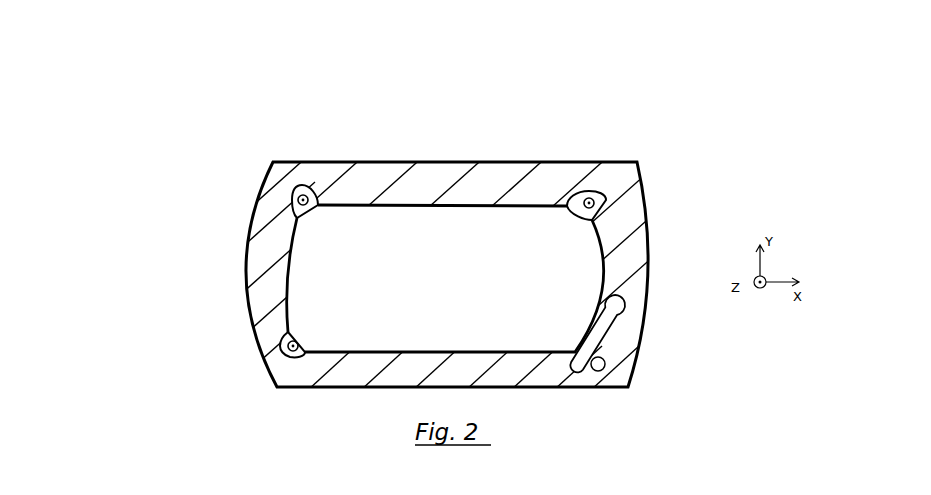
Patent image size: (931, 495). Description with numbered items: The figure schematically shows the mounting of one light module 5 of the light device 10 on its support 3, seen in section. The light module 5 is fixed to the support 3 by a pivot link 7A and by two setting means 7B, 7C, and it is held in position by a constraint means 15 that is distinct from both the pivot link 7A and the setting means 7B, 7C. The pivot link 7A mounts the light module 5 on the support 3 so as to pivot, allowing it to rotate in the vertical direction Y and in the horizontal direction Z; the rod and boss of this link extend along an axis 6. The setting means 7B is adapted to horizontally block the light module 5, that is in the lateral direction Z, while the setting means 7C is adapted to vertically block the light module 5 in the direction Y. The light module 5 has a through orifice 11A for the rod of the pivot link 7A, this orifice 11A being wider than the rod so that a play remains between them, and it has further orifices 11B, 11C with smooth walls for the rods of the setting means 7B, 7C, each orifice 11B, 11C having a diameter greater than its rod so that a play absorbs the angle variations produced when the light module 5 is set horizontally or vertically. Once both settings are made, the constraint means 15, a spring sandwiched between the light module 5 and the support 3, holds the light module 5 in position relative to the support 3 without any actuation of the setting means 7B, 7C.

The light device 10 is at (417, 244).
The support 3 is at (418, 187).
The light module 5 is at (506, 269).
The axis 6 is at (322, 207).
The pivot link 7A is at (306, 186).
The setting means 7B is at (622, 204).
The setting means 7C is at (283, 356).
The through orifice 11A is at (232, 156).
The orifice 11B is at (642, 147).
The orifice 11C is at (219, 369).
The constraint means 15 is at (642, 320).